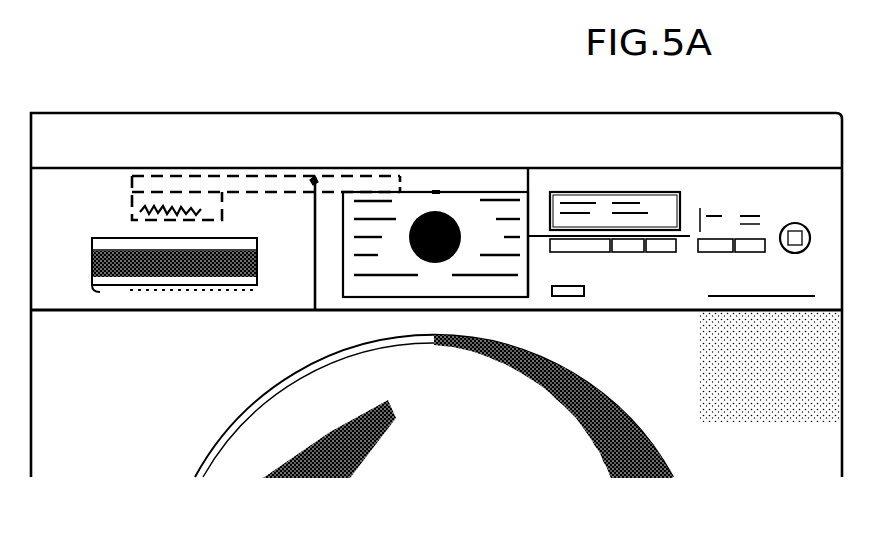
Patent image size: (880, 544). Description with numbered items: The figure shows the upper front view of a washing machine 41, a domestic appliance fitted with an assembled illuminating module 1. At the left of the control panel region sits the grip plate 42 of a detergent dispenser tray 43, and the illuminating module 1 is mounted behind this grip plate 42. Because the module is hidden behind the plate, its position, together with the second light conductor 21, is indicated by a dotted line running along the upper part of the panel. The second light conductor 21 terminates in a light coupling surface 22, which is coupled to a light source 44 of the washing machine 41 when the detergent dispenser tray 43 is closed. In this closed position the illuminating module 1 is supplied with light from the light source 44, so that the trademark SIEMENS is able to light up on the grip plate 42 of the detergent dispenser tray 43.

The illuminating module 1 is at (170, 175).
The second light conductor 21 is at (262, 184).
The light coupling surface 22 is at (316, 179).
The light source 44 is at (382, 181).
The washing machine 41 is at (795, 393).
The grip plate 42 is at (88, 221).
The detergent dispenser tray 43 is at (86, 327).